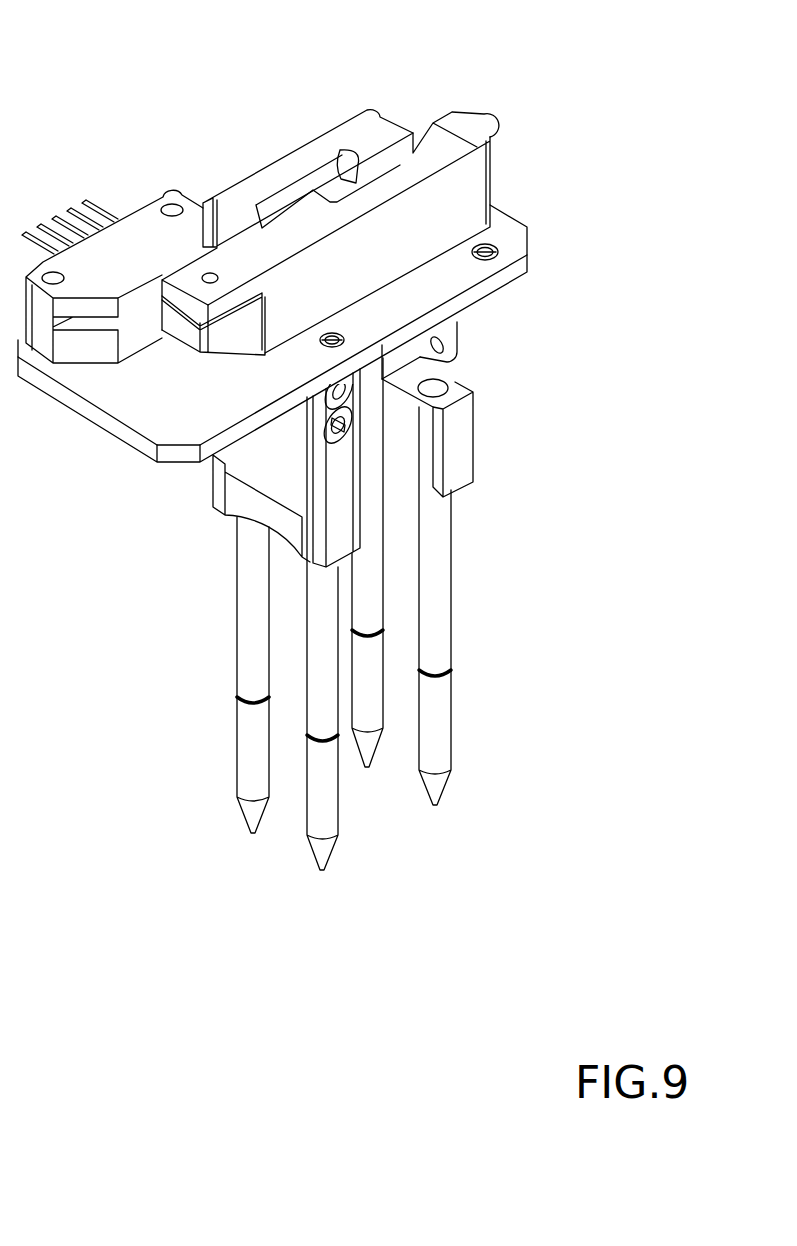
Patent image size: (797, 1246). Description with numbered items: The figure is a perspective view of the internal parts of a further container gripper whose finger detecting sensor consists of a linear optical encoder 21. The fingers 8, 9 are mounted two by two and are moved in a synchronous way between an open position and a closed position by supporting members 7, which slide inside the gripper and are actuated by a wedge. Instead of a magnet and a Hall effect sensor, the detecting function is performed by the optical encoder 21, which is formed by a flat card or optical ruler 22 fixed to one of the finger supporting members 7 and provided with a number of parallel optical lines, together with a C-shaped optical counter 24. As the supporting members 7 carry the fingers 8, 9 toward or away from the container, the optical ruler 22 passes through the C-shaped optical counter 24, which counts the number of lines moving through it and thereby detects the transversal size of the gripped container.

The supporting members 7 is at (372, 128).
The finger 8 is at (252, 600).
The finger 9 is at (440, 553).
The optical encoder 21 is at (157, 360).
The flat card or optical ruler 22 is at (231, 312).
The C-shaped optical counter 24 is at (143, 220).